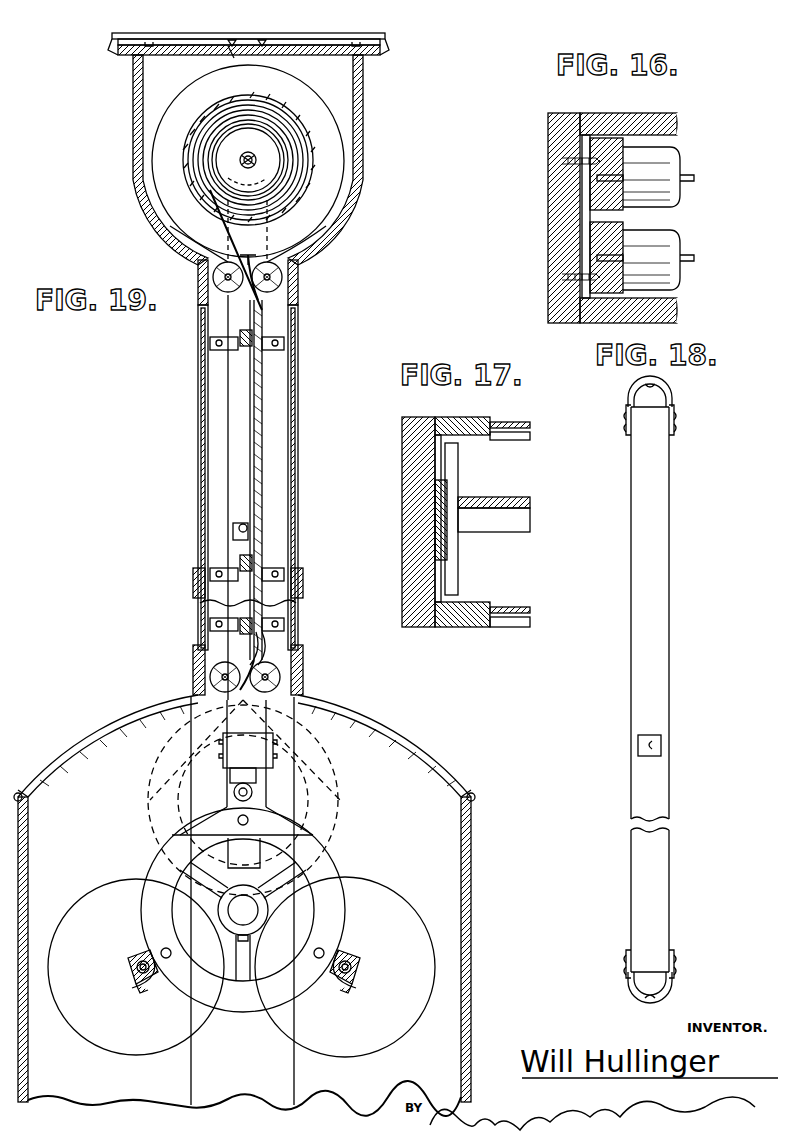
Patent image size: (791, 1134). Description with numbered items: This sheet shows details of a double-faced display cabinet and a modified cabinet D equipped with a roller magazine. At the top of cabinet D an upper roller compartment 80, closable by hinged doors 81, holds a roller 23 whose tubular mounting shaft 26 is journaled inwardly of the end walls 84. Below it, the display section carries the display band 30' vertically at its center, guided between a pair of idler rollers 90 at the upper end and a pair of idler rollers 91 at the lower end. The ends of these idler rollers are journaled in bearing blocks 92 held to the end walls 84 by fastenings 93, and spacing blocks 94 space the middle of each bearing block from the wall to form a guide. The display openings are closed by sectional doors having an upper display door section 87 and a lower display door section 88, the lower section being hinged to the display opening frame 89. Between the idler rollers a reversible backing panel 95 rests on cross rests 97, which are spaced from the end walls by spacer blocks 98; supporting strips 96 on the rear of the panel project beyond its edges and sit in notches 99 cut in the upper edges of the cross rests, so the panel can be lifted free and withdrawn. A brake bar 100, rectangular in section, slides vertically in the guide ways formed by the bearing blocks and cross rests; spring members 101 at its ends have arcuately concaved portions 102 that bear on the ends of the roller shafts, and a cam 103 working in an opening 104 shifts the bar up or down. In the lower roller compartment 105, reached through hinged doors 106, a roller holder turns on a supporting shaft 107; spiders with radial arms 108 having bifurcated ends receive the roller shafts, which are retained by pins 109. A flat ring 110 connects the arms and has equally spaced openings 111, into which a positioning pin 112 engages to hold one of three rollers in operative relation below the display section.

In FIG. 19, the roller 23 is at (168, 131).
In FIG. 19, the tubular mounting shaft 26 is at (256, 160).
In FIG. 19, the display band 30' is at (291, 472).
In FIG. 17, the display band 30' is at (536, 476).
In FIG. 19, the upper roller compartment 80 is at (342, 112).
In FIG. 19, the hinged doors 81 is at (352, 62).
In FIG. 16, the end wall 84 is at (556, 216).
In FIG. 17, the end wall 84 is at (418, 486).
In FIG. 19, the upper display door section 87 is at (202, 392).
In FIG. 17, the upper display door section 87 is at (510, 422).
In FIG. 19, the lower display door section 88 is at (215, 625).
In FIG. 16, the display opening frame 89 is at (660, 118).
In FIG. 17, the display opening frame 89 is at (440, 420).
In FIG. 19, the idler rollers 90 is at (212, 270).
In FIG. 16, the idler rollers 90 is at (690, 195).
In FIG. 19, the idler rollers 91 is at (200, 690).
In FIG. 16, the bearing block 92 is at (600, 222).
In FIG. 16, the fastenings 93 is at (590, 276).
In FIG. 16, the spacing block 94 is at (580, 160).
In FIG. 19, the backing panel 95 is at (252, 420).
In FIG. 17, the backing panel 95 is at (530, 503).
In FIG. 19, the supporting strips 96 is at (232, 330).
In FIG. 17, the supporting strips 96 is at (520, 527).
In FIG. 19, the cross rest 97 is at (240, 334).
In FIG. 17, the cross rest 97 is at (455, 568).
In FIG. 17, the spacer block 98 is at (440, 458).
In FIG. 19, the notch 99 is at (250, 630).
In FIG. 19, the brake bar 100 is at (234, 462).
In FIG. 17, the brake bar 100 is at (445, 525).
In FIG. 18, the brake bar 100 is at (652, 675).
In FIG. 19, the spring member 101 is at (275, 752).
In FIG. 18, the spring member 101 is at (672, 406).
In FIG. 18, the arcuately concaved portion 102 is at (655, 383).
In FIG. 19, the cam 103 is at (236, 532).
In FIG. 19, the opening 104 is at (240, 518).
In FIG. 18, the opening 104 is at (655, 747).
In FIG. 19, the lower roller compartment 105 is at (420, 788).
In FIG. 19, the hinged doors 106 is at (72, 755).
In FIG. 19, the supporting shaft 107 is at (270, 920).
In FIG. 19, the spokes or arms 108 is at (250, 910).
In FIG. 19, the pin 109 is at (152, 985).
In FIG. 19, the flat ring 110 is at (238, 1000).
In FIG. 19, the opening 111 is at (160, 950).
In FIG. 19, the positioning pin 112 is at (252, 822).
In FIG. 19, the cabinet D is at (138, 140).